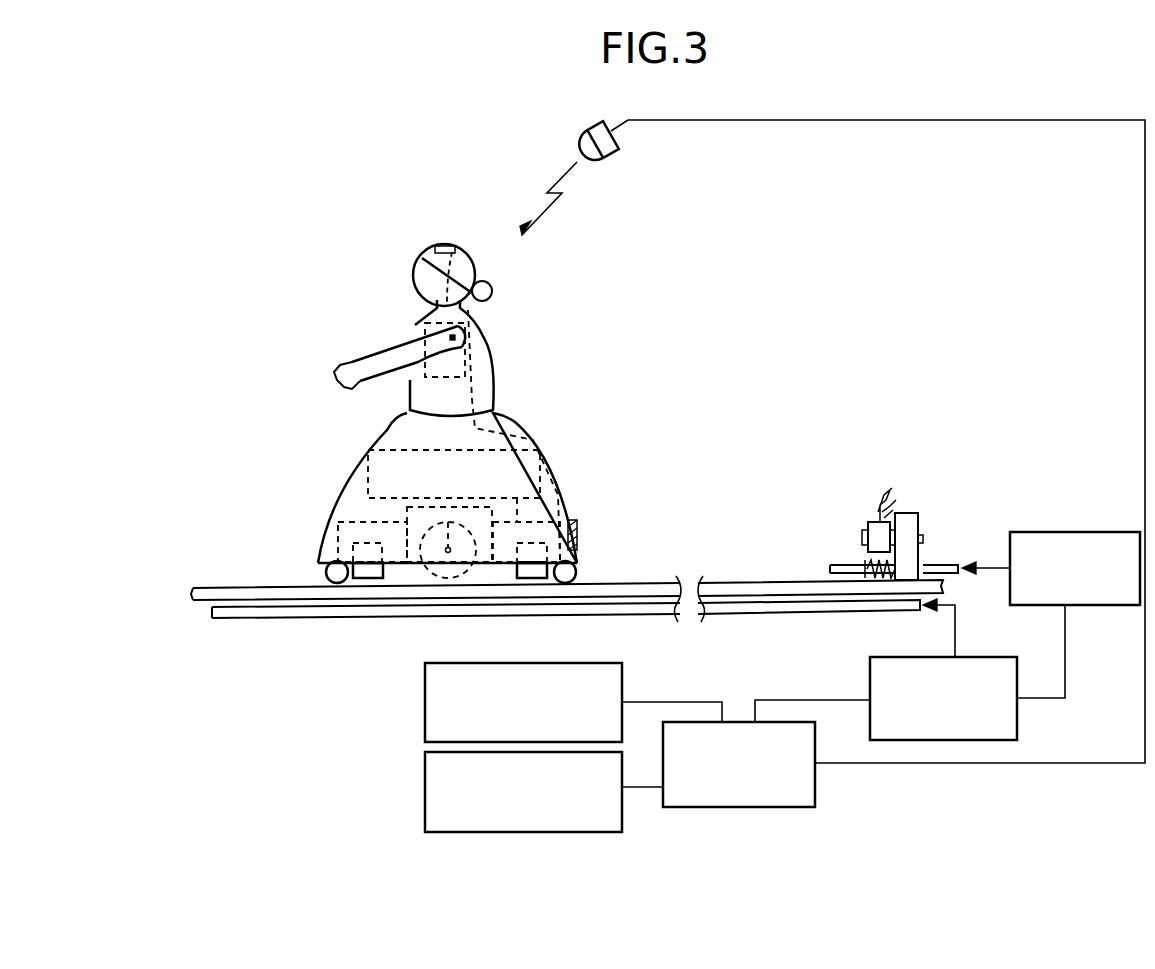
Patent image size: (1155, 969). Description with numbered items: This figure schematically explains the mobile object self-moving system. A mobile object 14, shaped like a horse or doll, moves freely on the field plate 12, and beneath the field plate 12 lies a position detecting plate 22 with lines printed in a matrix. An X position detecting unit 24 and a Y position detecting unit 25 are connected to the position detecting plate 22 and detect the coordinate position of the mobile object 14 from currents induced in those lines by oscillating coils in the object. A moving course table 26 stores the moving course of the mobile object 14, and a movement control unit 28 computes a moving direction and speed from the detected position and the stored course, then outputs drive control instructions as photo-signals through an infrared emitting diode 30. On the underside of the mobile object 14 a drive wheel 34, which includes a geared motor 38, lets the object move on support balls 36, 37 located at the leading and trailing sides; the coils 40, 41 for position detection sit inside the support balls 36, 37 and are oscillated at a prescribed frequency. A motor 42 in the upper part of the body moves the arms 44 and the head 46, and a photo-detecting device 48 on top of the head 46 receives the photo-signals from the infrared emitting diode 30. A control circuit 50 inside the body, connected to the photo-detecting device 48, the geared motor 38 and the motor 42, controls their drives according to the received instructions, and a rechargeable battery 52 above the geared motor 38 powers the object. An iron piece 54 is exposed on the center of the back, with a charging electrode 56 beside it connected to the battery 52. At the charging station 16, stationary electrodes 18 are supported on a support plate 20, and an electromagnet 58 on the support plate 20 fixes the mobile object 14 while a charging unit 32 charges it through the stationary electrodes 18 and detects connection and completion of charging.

The field plate 12 is at (223, 592).
The mobile object 14 is at (452, 424).
The charging station 16 is at (888, 481).
The stationary electrodes 18 is at (838, 565).
The support plate 20 is at (918, 528).
The position detecting plate 22 is at (620, 612).
The X position detecting unit 24 is at (985, 657).
The Y position detecting unit 25 is at (425, 712).
The moving course table 26 is at (425, 782).
The movement control unit 28 is at (815, 783).
The infrared emitting diode 30 is at (618, 147).
The charging unit 32 is at (1058, 532).
The drive wheel 34 is at (448, 553).
The support ball 36 is at (326, 571).
The support ball 37 is at (576, 572).
The geared motor 38 is at (407, 563).
The coil 40 is at (338, 540).
The coil 41 is at (578, 550).
The motor 42 is at (413, 378).
The arm 44 is at (380, 358).
The head 46 is at (422, 278).
The photo-detecting device 48 is at (443, 246).
The control circuit 50 is at (560, 512).
The rechargeable battery 52 is at (535, 460).
The iron piece 54 is at (578, 523).
The charging electrode 56 is at (548, 563).
The electromagnet 58 is at (872, 527).